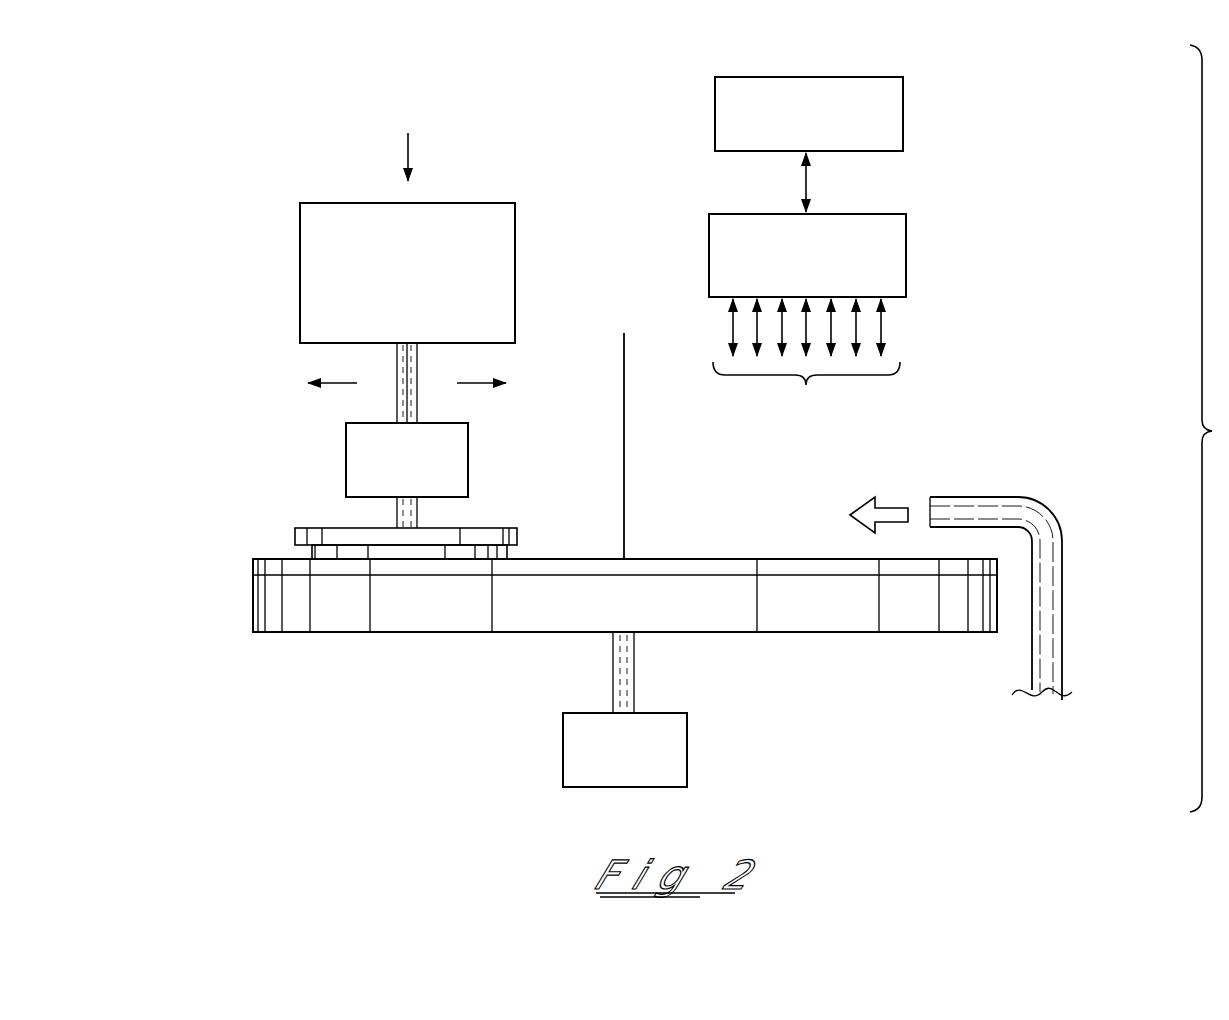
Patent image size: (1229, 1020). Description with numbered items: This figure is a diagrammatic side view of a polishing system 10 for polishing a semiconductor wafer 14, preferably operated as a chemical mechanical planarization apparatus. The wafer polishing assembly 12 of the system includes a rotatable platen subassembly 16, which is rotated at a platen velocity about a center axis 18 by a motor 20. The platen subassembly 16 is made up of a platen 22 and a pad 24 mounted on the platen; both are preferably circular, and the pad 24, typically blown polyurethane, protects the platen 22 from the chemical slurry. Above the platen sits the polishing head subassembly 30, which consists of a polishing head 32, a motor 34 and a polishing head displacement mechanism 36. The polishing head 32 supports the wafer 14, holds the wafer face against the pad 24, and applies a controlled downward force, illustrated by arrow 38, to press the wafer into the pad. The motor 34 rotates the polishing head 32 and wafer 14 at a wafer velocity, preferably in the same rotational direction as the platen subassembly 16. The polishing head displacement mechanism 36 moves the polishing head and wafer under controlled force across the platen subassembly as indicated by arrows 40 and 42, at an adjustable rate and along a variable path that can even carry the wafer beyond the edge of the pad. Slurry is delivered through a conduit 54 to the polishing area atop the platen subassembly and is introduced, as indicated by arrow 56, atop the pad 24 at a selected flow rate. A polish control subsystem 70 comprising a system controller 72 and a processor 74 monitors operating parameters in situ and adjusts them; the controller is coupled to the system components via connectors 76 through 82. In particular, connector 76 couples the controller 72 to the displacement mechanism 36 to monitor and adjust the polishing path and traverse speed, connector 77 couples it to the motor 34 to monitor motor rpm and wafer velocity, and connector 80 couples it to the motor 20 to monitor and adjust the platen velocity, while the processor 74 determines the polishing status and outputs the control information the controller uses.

The polishing system 10 is at (589, 133).
The wafer polishing assembly 12 is at (692, 488).
The semiconductor wafer 14 is at (310, 556).
The platen subassembly 16 is at (503, 657).
The center axis 18 is at (624, 428).
The motor 20 is at (687, 748).
The platen 22 is at (253, 610).
The pad 24 is at (258, 568).
The polishing head subassembly 30 is at (249, 350).
The polishing head 32 is at (478, 538).
The motor 34 is at (468, 461).
The polishing head displacement mechanism 36 is at (516, 225).
The arrow 38 is at (410, 147).
The arrow 40 is at (340, 390).
The arrow 42 is at (475, 390).
The conduit 54 is at (1062, 620).
The arrow 56 is at (890, 512).
The polish control subsystem 70 is at (942, 177).
The system controller 72 is at (906, 255).
The processor 74 is at (903, 113).
The connector 76 is at (517, 273).
The connector 77 is at (345, 459).
The connector 80 is at (562, 749).
The connector 82 is at (806, 358).